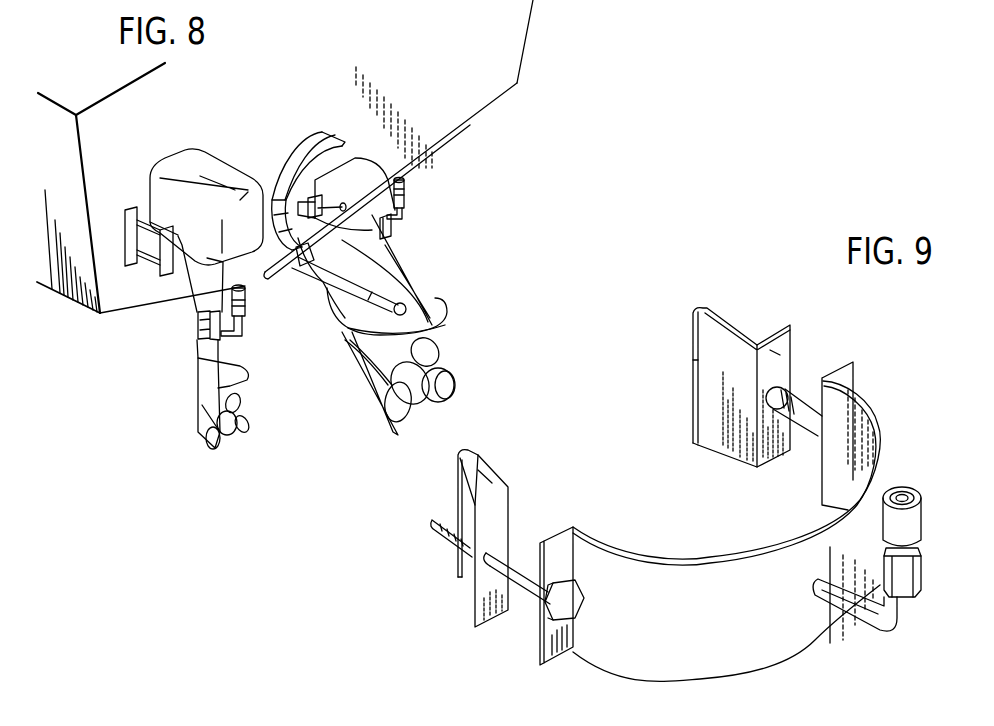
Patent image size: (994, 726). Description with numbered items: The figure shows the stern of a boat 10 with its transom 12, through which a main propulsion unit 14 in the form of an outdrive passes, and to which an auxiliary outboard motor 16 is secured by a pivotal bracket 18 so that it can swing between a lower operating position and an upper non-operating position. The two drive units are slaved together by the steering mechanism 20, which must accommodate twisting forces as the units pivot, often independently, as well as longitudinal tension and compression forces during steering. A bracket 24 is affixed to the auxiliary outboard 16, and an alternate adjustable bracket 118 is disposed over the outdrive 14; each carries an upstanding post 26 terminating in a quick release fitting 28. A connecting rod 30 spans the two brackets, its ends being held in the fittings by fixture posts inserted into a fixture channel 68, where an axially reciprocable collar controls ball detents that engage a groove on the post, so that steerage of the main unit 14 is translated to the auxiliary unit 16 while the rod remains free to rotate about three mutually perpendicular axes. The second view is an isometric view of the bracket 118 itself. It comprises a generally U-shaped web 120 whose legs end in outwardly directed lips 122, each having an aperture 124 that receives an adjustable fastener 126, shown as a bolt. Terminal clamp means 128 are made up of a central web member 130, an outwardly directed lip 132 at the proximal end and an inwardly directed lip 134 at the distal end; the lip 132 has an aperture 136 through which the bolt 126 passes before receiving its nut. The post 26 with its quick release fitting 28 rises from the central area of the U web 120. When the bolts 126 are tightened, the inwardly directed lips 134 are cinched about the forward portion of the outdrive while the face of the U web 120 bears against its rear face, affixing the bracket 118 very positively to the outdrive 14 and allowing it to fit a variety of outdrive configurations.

In FIG. 8, the boat 10 is at (546, 70).
In FIG. 8, the transom 12 is at (517, 83).
In FIG. 8, the main propulsion unit 14 is at (440, 278).
In FIG. 8, the auxiliary outboard motor 16 is at (198, 140).
In FIG. 8, the pivotal bracket 18 is at (141, 270).
In FIG. 8, the steering mechanism 20 is at (279, 283).
In FIG. 8, the bracket 24 is at (194, 334).
In FIG. 8, the upstanding post 26 is at (249, 325).
In FIG. 9, the upstanding post 26 is at (914, 618).
In FIG. 8, the quick release fitting 28 is at (250, 301).
In FIG. 9, the quick release fitting 28 is at (930, 528).
In FIG. 8, the connecting rod 30 is at (321, 255).
In FIG. 9, the fixture channel 68 is at (907, 487).
In FIG. 8, the bracket 118 is at (388, 233).
In FIG. 9, the bracket 118 is at (748, 305).
In FIG. 9, the U-shaped web 120 is at (800, 640).
In FIG. 9, the outwardly directed lips 122 is at (568, 650).
In FIG. 9, the aperture 124 is at (546, 607).
In FIG. 9, the adjustable fastener 126 is at (520, 560).
In FIG. 9, the terminal clamp means 128 is at (500, 470).
In FIG. 9, the central web member 130 is at (478, 493).
In FIG. 9, the outwardly directed lip 132 is at (492, 590).
In FIG. 9, the inwardly directed lip 134 is at (694, 357).
In FIG. 9, the aperture 136 is at (490, 565).